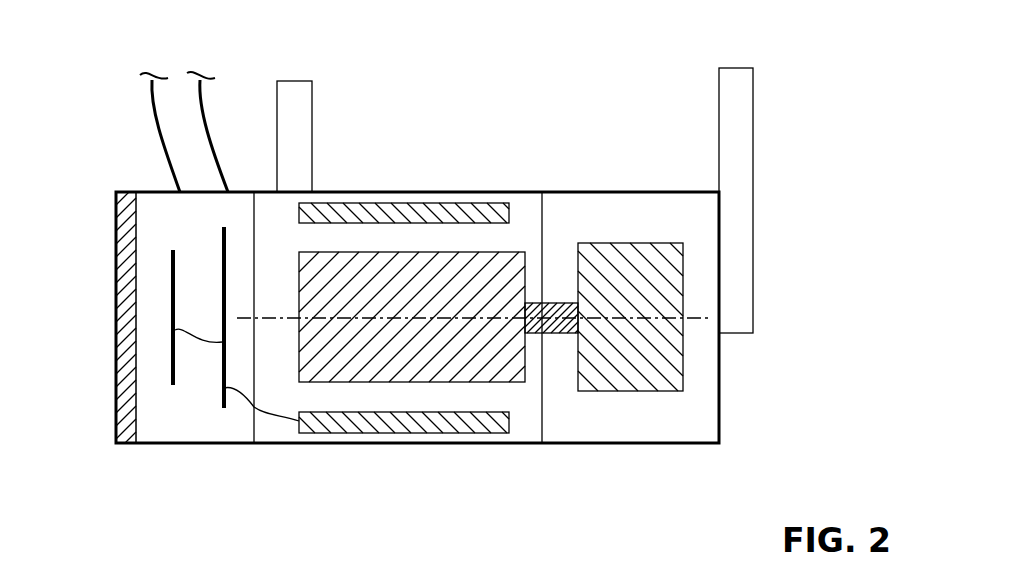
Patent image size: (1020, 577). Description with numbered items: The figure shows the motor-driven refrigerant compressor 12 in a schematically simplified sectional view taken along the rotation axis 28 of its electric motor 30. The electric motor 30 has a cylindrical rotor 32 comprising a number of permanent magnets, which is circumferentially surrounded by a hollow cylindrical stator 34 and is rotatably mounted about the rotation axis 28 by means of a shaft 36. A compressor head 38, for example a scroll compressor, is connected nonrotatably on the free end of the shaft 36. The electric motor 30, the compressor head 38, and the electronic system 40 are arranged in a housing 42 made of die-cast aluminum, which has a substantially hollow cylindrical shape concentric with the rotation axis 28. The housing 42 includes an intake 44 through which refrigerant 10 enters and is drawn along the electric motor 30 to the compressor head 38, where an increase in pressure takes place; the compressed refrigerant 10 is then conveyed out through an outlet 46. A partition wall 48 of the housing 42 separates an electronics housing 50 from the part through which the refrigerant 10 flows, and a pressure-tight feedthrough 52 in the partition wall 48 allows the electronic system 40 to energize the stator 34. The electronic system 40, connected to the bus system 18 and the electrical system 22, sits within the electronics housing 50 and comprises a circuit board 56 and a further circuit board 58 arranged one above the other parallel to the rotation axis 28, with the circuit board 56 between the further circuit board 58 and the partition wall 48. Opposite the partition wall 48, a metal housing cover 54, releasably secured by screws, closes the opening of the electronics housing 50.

The refrigerant 10 is at (528, 225).
The refrigerant compressor 12 is at (816, 109).
The bus system 18 is at (152, 115).
The electrical system 22 is at (205, 113).
The rotation axis 28 is at (693, 318).
The electric motor 30 is at (403, 188).
The rotor 32 is at (473, 368).
The stator 34 is at (387, 423).
The shaft 36 is at (561, 320).
The compressor head 38 is at (628, 255).
The electronic system 40 is at (190, 413).
The housing 42 is at (473, 195).
The intake 44 is at (312, 123).
The outlet 46 is at (732, 117).
The partition wall 48 is at (253, 425).
The electronics housing 50 is at (148, 442).
The feedthrough 52 is at (258, 410).
The housing cover 54 is at (122, 310).
The circuit board 56 is at (224, 250).
The further circuit board 58 is at (175, 367).